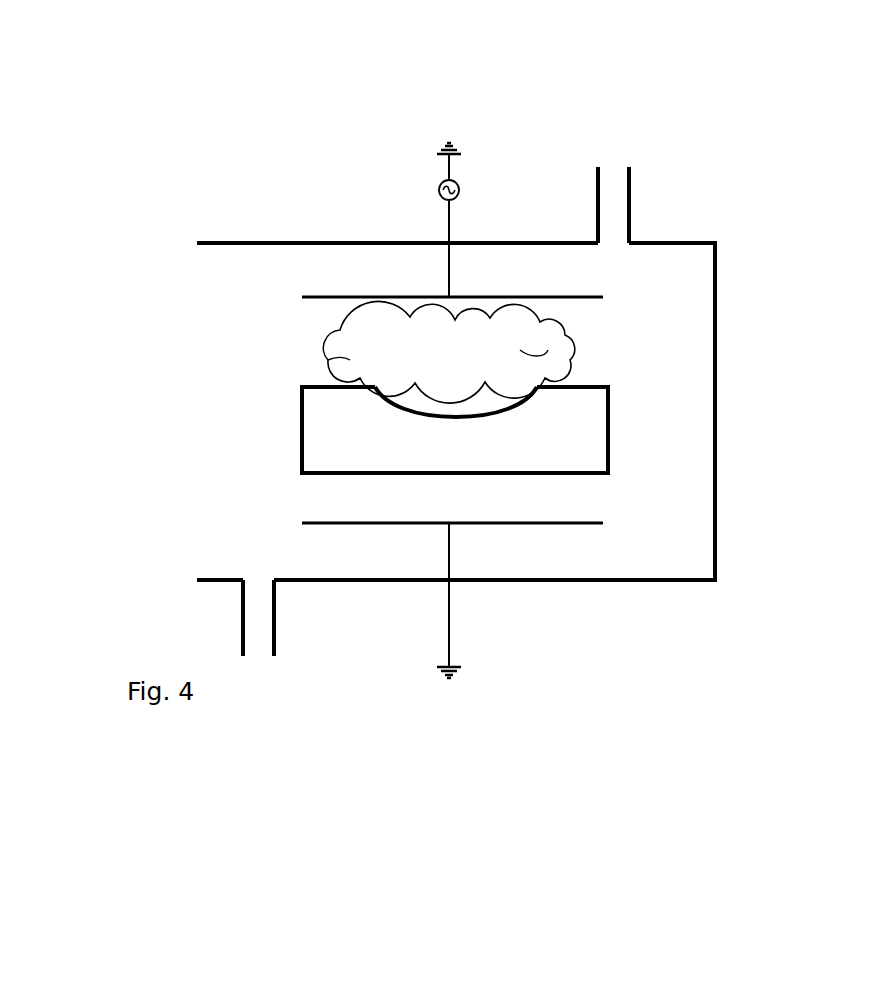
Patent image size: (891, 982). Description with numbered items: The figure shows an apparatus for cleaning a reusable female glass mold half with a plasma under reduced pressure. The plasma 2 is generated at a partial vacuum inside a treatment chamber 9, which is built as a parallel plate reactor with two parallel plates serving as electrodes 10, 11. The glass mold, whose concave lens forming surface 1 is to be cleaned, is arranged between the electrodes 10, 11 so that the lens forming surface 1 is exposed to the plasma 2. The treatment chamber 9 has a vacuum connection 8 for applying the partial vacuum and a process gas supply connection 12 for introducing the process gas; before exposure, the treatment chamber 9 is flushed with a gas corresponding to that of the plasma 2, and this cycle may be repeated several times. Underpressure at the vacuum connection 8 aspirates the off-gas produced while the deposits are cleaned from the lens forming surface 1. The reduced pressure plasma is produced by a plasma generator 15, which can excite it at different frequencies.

The lens forming surface 1 is at (523, 410).
The plasma 2 is at (372, 343).
The vacuum connection 8 is at (257, 648).
The treatment chamber 9 is at (732, 346).
The electrode 10 is at (393, 296).
The electrode 11 is at (483, 523).
The process gas supply connection 12 is at (612, 178).
The plasma generator 15 is at (459, 185).